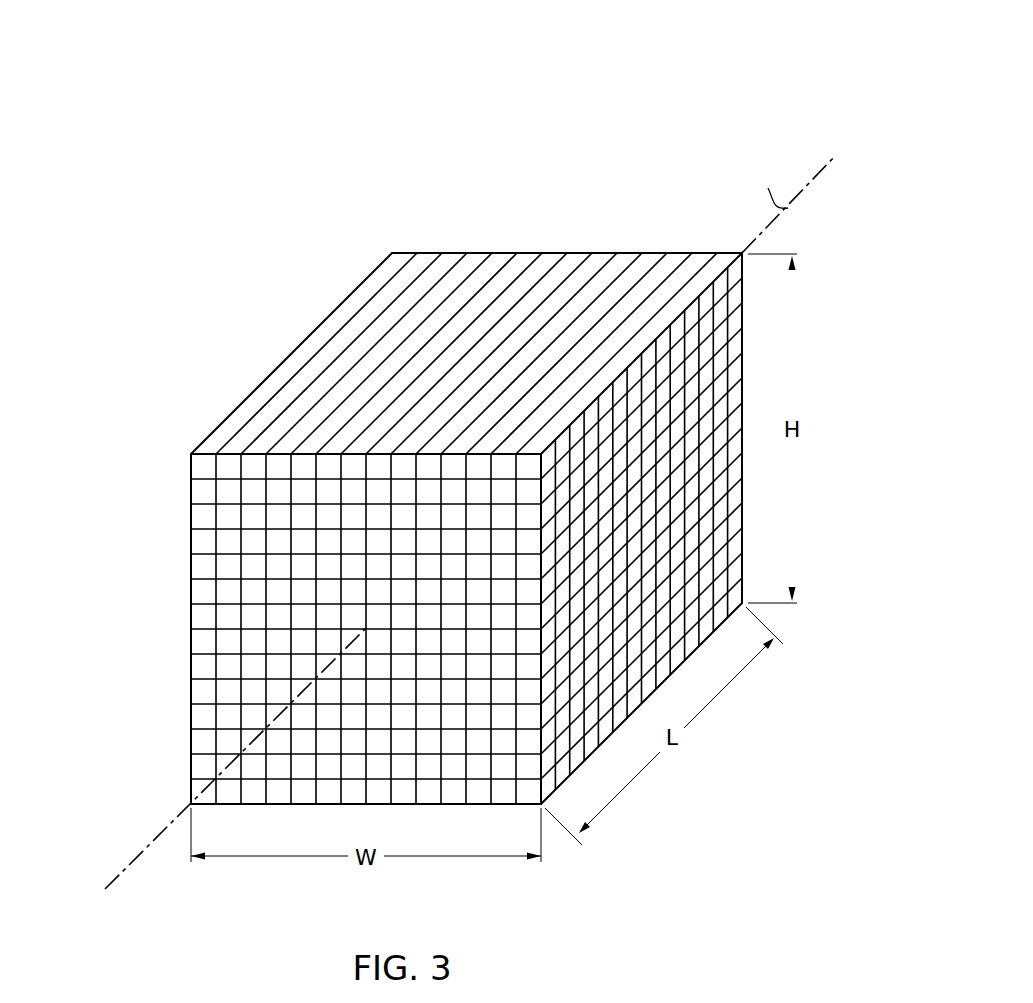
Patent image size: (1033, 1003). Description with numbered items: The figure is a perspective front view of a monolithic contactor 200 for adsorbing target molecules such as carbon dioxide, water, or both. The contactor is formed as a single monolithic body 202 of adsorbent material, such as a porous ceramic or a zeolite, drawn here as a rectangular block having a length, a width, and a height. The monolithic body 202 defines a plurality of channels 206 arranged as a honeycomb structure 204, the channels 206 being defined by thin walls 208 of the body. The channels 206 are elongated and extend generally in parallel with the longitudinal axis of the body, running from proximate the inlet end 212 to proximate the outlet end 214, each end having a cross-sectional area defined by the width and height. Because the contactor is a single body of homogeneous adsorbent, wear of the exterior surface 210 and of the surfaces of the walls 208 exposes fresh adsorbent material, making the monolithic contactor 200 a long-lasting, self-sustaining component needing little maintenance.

The monolithic contactor 200 is at (700, 102).
The monolithic body 202 is at (238, 402).
The honeycomb structure 204 is at (262, 606).
The channels 206 is at (203, 490).
The walls 208 is at (213, 570).
The exterior surface 210 is at (367, 295).
The inlet end 212 is at (108, 798).
The outlet end 214 is at (466, 243).